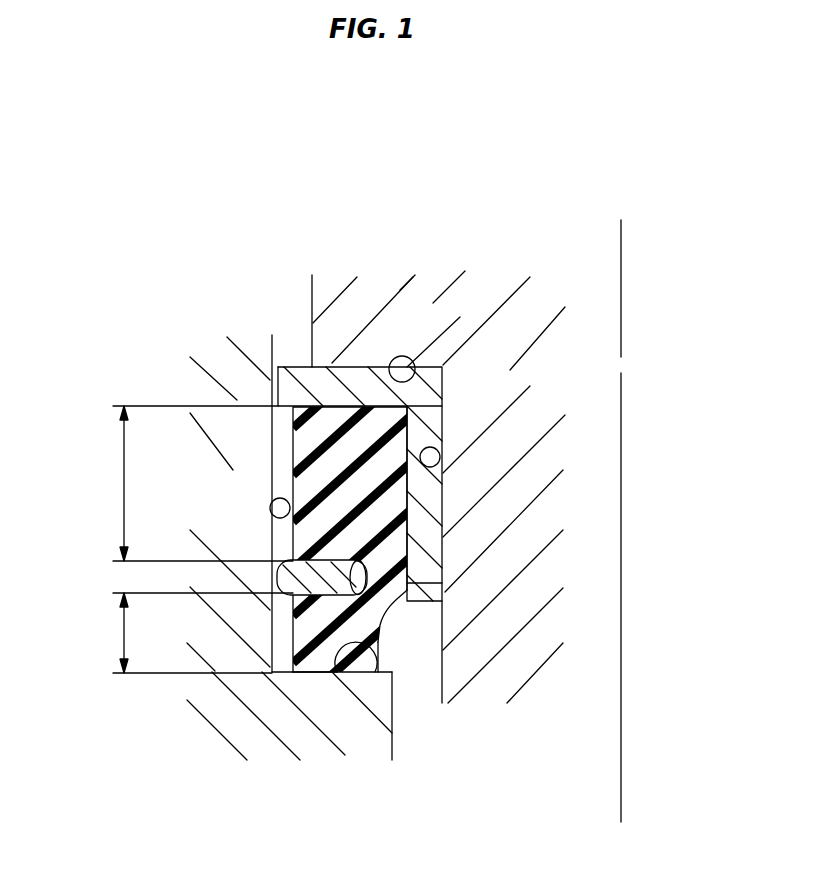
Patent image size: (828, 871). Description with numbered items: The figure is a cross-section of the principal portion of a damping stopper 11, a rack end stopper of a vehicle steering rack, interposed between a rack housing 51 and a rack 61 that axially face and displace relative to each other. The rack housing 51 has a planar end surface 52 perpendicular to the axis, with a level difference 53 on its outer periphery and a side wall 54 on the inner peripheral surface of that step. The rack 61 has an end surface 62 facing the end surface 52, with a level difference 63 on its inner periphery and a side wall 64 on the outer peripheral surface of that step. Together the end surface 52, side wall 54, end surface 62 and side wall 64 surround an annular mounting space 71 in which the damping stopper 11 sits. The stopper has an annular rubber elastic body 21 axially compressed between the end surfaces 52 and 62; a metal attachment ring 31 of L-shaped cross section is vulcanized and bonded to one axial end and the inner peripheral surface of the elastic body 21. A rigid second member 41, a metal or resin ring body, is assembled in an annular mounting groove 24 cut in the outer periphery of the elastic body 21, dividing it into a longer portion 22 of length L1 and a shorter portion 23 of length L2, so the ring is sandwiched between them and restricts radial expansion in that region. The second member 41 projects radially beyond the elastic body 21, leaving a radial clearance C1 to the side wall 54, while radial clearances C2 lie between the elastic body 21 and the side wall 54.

The damping stopper 11 is at (292, 366).
The elastic body 21 is at (443, 537).
The portion of length L1 22 is at (338, 457).
The portion of length L2 23 is at (340, 676).
The mounting groove 24 is at (443, 583).
The metal attachment ring 31 is at (443, 407).
The second member 41 is at (333, 660).
The rack housing 51 is at (223, 708).
The end surface 52 is at (380, 675).
The level difference 53 is at (230, 519).
The side wall 54 is at (270, 520).
The rack 61 is at (533, 318).
The end surface 62 is at (410, 362).
The level difference 63 is at (475, 490).
The side wall 64 is at (443, 473).
The mounting space 71 is at (410, 612).
The radial clearance C1 is at (277, 580).
The radial clearance C2 is at (283, 457).
The length L1 is at (191, 483).
The length L2 is at (191, 633).